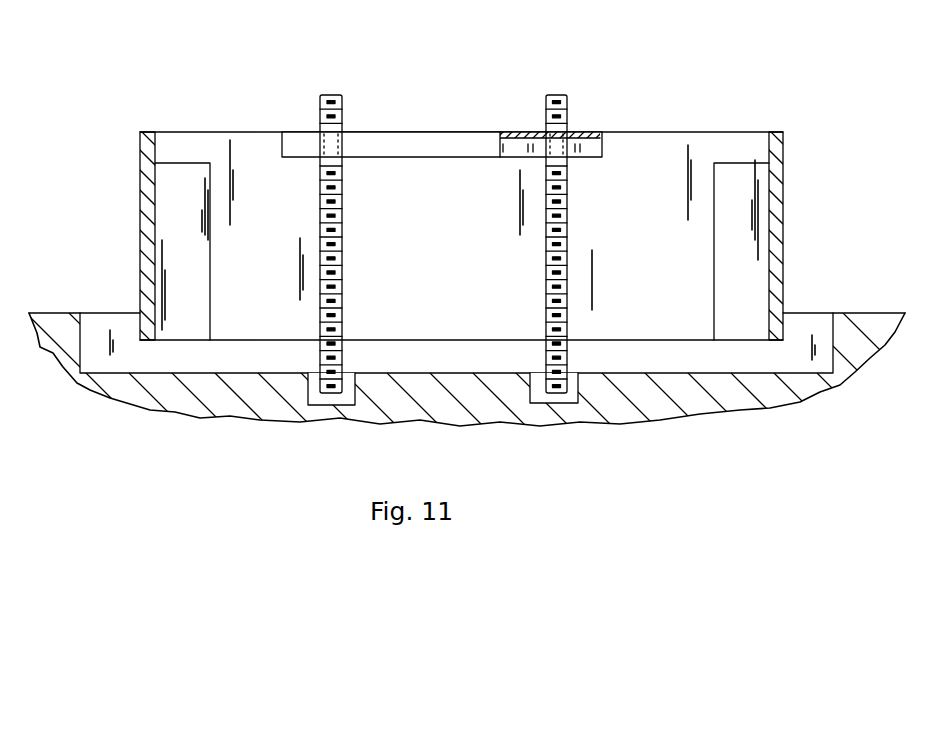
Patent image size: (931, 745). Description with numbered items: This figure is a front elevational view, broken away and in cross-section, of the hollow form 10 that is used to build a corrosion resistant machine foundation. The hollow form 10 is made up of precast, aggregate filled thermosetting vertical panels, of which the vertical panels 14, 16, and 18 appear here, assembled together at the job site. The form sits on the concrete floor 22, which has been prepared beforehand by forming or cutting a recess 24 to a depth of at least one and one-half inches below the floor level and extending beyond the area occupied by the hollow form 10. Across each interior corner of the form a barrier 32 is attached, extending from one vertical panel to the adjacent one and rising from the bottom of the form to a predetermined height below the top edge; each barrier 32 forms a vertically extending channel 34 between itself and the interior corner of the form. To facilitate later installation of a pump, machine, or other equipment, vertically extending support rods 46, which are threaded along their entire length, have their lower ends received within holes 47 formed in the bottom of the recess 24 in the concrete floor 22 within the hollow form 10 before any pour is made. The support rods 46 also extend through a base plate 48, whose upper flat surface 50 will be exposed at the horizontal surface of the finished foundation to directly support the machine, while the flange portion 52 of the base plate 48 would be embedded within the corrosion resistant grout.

The hollow form 10 is at (513, 97).
The vertical panel 14 is at (626, 213).
The vertical panel 16 is at (140, 192).
The vertical panel 18 is at (783, 190).
The concrete floor 22 is at (50, 313).
The recess 24 is at (82, 332).
The barrier 32 is at (187, 265).
The vertically extending channel 34 is at (182, 163).
The vertically extending support rods 46 is at (320, 112).
The holes 47 is at (340, 404).
The base plate 48 is at (366, 136).
The upper flat surface 50 is at (412, 132).
The flange portion 52 is at (452, 135).